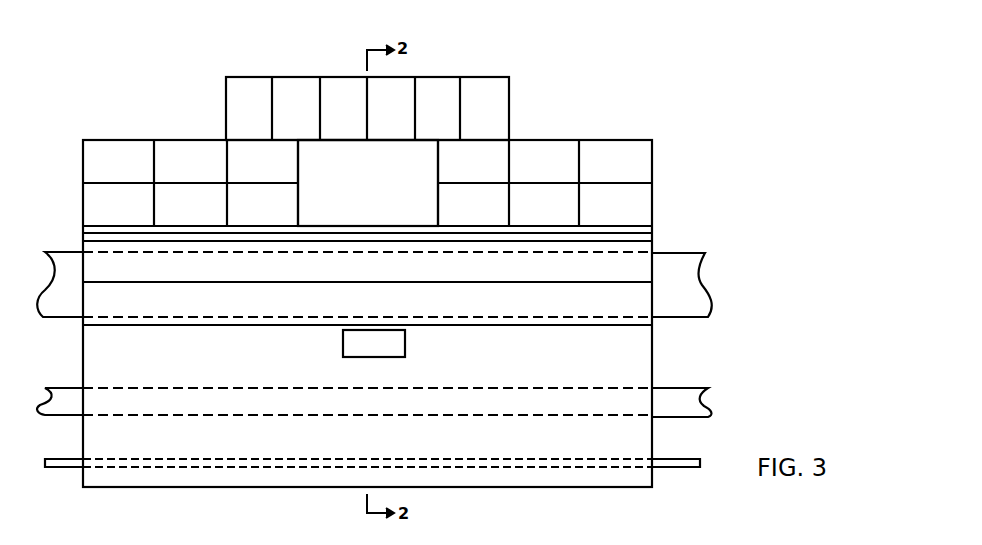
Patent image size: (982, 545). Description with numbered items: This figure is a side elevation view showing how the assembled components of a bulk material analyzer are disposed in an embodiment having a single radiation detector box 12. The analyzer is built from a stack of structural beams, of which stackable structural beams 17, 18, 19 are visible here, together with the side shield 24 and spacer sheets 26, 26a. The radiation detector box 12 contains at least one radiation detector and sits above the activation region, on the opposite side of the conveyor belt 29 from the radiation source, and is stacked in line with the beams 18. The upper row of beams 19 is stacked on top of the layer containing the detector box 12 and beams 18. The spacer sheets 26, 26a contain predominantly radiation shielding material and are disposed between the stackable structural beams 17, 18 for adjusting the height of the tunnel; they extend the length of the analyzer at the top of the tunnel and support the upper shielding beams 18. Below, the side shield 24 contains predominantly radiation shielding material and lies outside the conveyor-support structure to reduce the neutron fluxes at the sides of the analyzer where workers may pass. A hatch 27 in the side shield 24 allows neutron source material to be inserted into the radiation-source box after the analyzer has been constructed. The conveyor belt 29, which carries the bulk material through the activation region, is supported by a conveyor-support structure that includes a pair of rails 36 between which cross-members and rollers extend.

The radiation detector box 12 is at (384, 195).
The stackable structural beam 17 is at (384, 275).
The stackable structural beam 18 is at (653, 144).
The stackable structural beam 19 is at (509, 88).
The side shield 24 is at (384, 383).
The spacer sheet 26 is at (653, 234).
The spacer sheet 26a is at (653, 229).
The hatch 27 is at (405, 342).
The conveyor belt 29 is at (700, 463).
The rail 36 is at (670, 387).